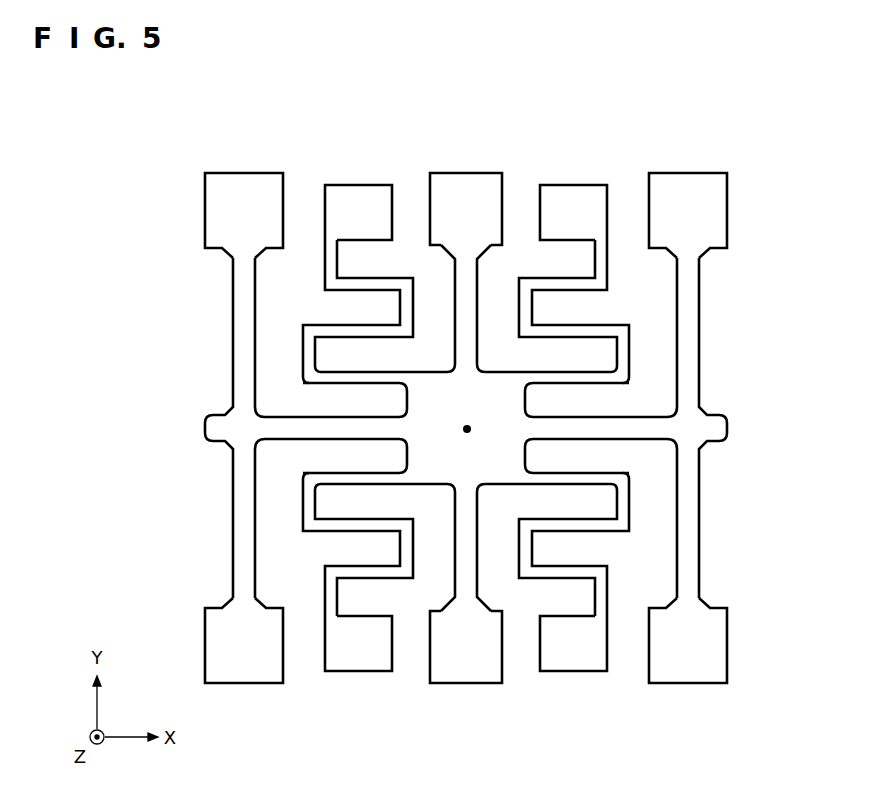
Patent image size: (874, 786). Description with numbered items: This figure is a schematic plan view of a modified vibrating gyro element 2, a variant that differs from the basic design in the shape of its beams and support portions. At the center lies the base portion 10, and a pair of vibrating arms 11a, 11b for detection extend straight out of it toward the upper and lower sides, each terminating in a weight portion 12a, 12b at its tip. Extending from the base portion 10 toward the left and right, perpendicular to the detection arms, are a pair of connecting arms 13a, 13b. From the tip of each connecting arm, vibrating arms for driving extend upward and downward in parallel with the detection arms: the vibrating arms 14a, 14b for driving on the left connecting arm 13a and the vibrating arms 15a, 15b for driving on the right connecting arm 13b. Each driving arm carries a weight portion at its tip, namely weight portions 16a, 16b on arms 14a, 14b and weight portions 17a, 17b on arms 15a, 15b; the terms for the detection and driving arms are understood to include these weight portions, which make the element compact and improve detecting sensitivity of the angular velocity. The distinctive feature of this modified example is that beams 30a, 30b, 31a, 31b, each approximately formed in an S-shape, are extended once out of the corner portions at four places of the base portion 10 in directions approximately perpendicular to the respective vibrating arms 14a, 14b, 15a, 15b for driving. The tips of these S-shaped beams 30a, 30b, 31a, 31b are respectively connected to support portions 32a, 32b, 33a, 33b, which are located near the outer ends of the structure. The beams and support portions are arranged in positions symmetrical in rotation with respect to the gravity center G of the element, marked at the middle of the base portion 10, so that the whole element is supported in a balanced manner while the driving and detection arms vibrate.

The vibrating gyro element 2 is at (738, 134).
The base portion 10 is at (516, 461).
The vibrating arm for detection 11a is at (481, 277).
The vibrating arm for detection 11b is at (483, 580).
The weight portion 12a is at (466, 184).
The weight portion 12b is at (466, 672).
The connecting arm 13a is at (279, 423).
The connecting arm 13b is at (650, 424).
The vibrating arm for driving 14a is at (243, 326).
The vibrating arm for driving 14b is at (243, 516).
The vibrating arm for driving 15a is at (689, 326).
The vibrating arm for driving 15b is at (689, 516).
The weight portion 16a is at (216, 206).
The weight portion 16b is at (216, 637).
The weight portion 17a is at (719, 207).
The weight portion 17b is at (719, 640).
The beam 30a is at (318, 358).
The beam 30b is at (614, 358).
The beam 31a is at (318, 502).
The beam 31b is at (614, 502).
The support portion 32a is at (357, 192).
The support portion 32b is at (573, 192).
The support portion 33a is at (357, 662).
The support portion 33b is at (573, 662).
The gravity center G is at (467, 414).